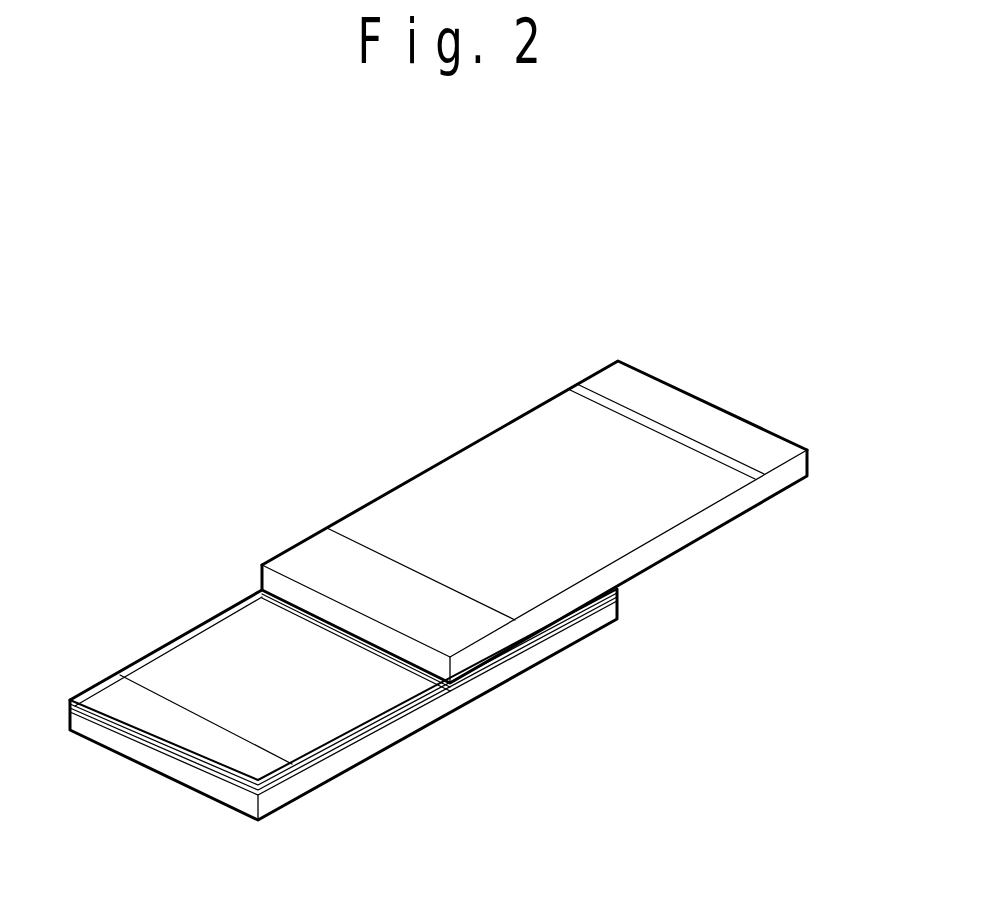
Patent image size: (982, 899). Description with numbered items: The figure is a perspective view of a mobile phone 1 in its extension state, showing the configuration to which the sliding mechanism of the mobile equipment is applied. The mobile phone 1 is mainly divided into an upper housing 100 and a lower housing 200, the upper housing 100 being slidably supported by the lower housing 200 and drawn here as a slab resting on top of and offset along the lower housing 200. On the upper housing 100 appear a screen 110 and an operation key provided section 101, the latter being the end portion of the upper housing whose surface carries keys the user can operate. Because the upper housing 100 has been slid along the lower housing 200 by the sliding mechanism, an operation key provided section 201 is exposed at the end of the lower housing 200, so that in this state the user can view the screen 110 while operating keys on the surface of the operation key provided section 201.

The mobile phone 1 is at (358, 284).
The upper housing 100 is at (698, 400).
The screen 110 is at (486, 451).
The operation key provided section 101 is at (316, 552).
The lower housing 200 is at (170, 780).
The operation key provided section 201 is at (186, 652).